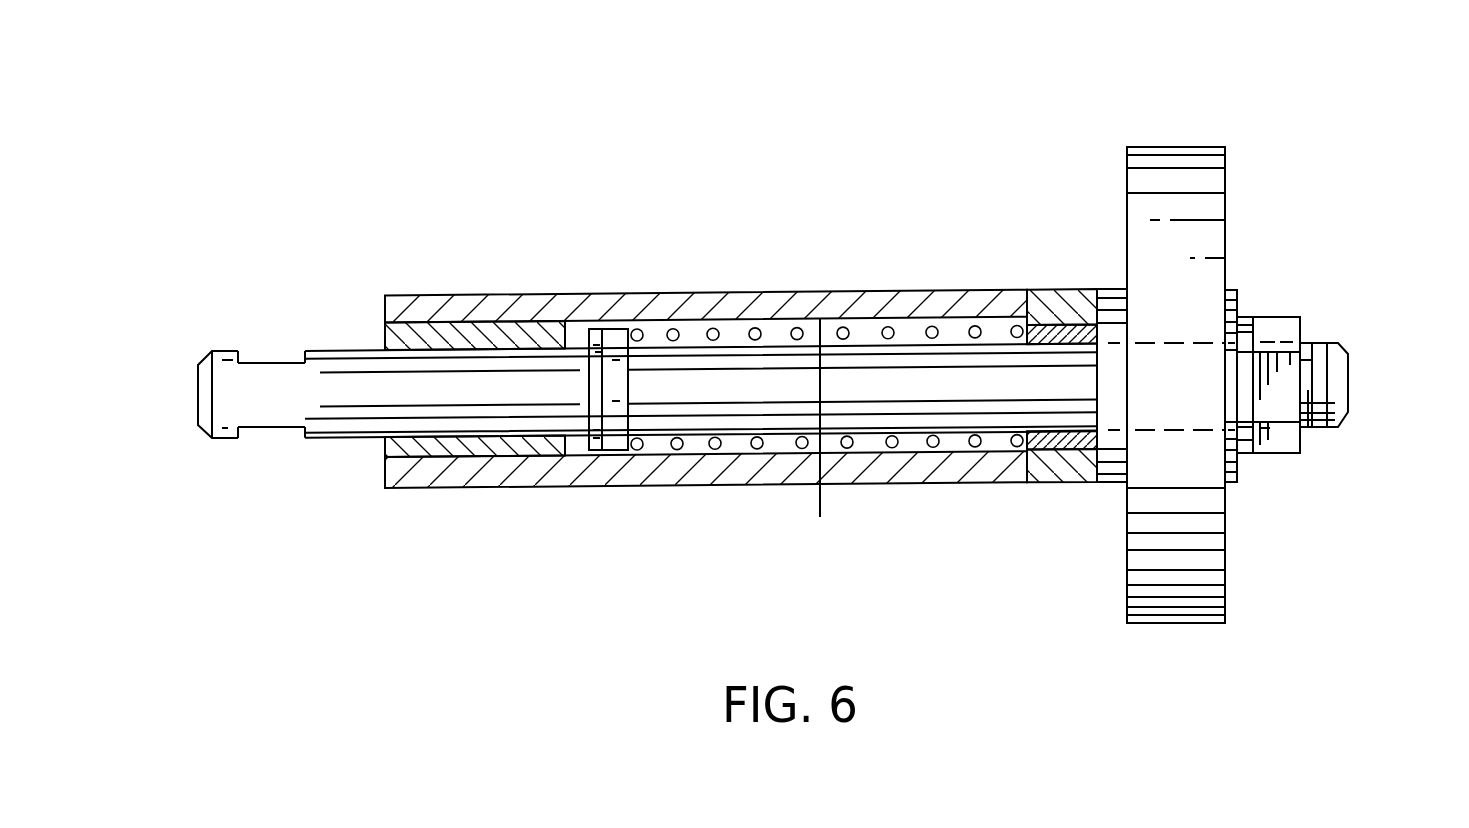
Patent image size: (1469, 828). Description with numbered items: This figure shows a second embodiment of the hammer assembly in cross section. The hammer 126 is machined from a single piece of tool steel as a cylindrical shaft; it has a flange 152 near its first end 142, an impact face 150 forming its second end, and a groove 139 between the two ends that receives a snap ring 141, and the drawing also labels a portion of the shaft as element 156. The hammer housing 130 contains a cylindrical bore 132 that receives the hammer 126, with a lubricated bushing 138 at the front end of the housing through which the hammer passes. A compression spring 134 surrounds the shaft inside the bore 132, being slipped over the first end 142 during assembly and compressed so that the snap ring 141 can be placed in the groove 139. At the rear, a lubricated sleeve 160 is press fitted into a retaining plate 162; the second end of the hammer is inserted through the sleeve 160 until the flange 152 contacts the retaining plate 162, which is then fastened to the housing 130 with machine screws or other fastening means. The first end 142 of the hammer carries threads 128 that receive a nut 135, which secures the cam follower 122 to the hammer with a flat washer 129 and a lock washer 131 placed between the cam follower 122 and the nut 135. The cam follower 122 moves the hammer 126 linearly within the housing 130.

The cam follower 122 is at (1178, 147).
The hammer 126 is at (312, 334).
The threads 128 is at (1328, 428).
The flat washer 129 is at (1230, 290).
The hammer housing 130 is at (703, 292).
The lock washer 131 is at (1243, 315).
The cylindrical bore 132 is at (824, 436).
The compression spring 134 is at (928, 328).
The nut 135 is at (1278, 453).
The lubricated bushing 138 is at (385, 330).
The groove 139 is at (587, 388).
The snap ring 141 is at (570, 444).
The first end 142 is at (1348, 387).
The impact face 150 is at (198, 392).
The flange 152 is at (1112, 482).
The rod neck 156 is at (265, 427).
The lubricated sleeve 160 is at (1053, 453).
The retaining plate 162 is at (1055, 289).